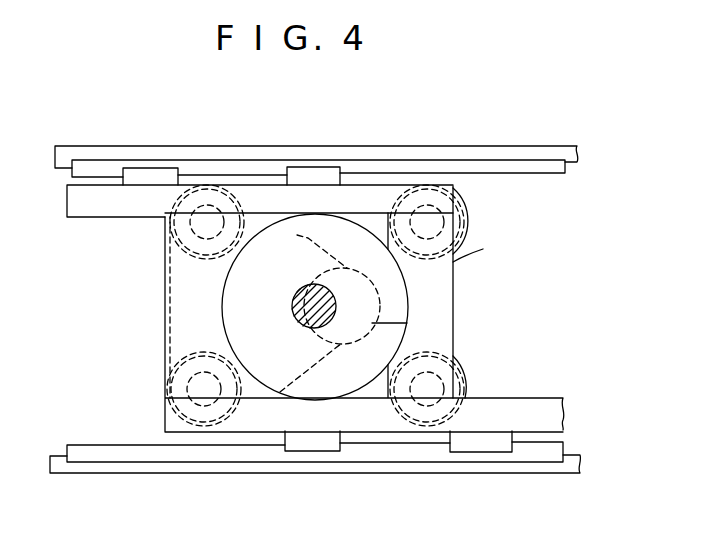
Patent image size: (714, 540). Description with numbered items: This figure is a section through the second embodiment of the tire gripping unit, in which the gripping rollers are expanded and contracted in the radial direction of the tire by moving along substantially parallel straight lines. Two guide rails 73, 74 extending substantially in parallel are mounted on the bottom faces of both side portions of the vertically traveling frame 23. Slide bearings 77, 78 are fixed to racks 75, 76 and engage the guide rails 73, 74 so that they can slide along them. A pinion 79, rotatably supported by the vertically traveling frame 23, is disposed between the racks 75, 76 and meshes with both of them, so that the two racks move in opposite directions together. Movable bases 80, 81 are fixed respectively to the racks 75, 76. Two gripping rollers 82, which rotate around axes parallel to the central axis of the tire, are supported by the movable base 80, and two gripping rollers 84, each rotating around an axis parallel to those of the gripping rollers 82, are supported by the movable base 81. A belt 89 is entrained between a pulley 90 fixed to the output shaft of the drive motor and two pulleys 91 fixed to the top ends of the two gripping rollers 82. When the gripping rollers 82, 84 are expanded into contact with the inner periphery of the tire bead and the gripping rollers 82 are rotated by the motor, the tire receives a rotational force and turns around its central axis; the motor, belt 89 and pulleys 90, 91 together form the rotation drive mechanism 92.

The vertically traveling frame 23 is at (422, 147).
The guide rail 73 is at (563, 442).
The guide rail 74 is at (545, 147).
The rack 75 is at (546, 397).
The rack 76 is at (88, 200).
The slide bearing 77 is at (312, 445).
The slide bearing 78 is at (323, 172).
The pinion 79 is at (407, 292).
The movable base 80 is at (182, 312).
The movable base 81 is at (487, 248).
The gripping roller 82 is at (213, 184).
The gripping roller 84 is at (462, 200).
The belt 89 is at (298, 238).
The pulley 90 is at (407, 323).
The pulley 91 is at (165, 232).
The rotation drive mechanism 92 is at (126, 278).